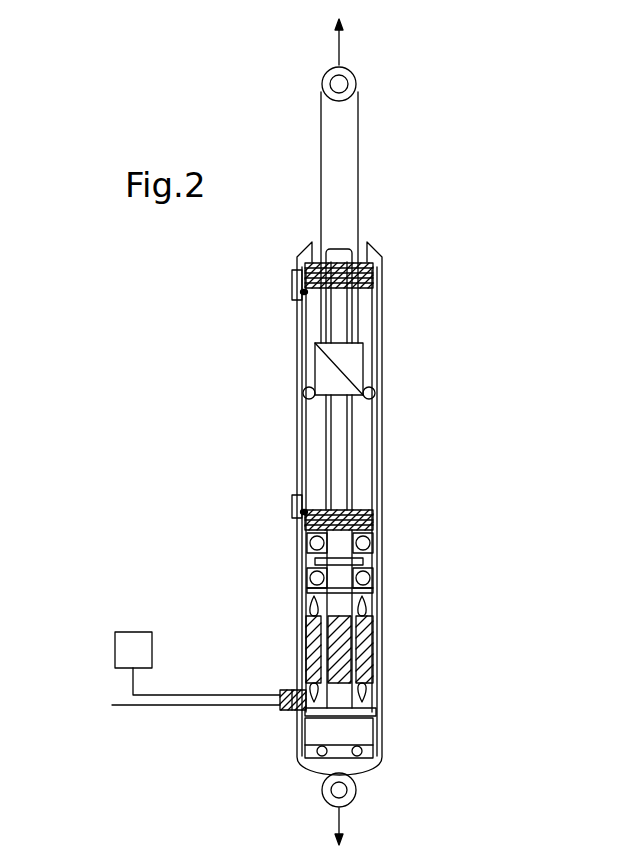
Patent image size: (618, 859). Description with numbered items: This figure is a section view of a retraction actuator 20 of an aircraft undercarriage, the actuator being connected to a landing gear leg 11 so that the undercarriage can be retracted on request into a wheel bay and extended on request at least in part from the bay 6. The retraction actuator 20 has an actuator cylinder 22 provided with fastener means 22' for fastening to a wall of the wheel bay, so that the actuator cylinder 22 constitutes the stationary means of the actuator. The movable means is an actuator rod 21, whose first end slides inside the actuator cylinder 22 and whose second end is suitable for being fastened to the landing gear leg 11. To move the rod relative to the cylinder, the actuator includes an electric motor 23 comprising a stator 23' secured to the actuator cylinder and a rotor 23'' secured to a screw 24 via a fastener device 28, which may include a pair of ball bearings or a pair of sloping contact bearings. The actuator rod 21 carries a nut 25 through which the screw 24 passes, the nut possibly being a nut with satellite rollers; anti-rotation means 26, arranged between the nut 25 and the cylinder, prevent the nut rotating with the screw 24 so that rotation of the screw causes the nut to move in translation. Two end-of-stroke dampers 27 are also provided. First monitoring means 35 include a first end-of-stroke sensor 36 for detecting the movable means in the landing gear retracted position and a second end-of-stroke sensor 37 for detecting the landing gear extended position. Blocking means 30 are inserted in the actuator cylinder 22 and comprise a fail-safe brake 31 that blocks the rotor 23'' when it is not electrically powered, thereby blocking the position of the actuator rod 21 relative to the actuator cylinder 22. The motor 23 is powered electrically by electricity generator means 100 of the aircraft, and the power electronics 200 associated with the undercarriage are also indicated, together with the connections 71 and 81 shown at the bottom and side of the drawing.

The wheel bay 6 is at (339, 833).
The landing gear leg 11 is at (339, 32).
The retraction actuator 20 is at (419, 127).
The actuator rod 21 is at (321, 147).
The actuator cylinder 22 is at (307, 750).
The fastener means 22' is at (374, 799).
The electric motor 23 is at (349, 647).
The stator 23' is at (379, 647).
The rotor 23'' is at (288, 640).
The screw 24 is at (340, 462).
The nut 25 is at (350, 358).
The anti-rotation means 26 is at (286, 393).
The end-of-stroke dampers 27 is at (373, 270).
The fastener device 28 is at (394, 562).
The blocking means 30 is at (401, 508).
The fail-safe brake 31 is at (394, 738).
The first monitoring means 35 is at (231, 557).
The first end-of-stroke sensor 36 is at (292, 505).
The second end-of-stroke sensor 37 is at (292, 290).
The connection 71 is at (117, 852).
The supply line 81 is at (140, 705).
The electricity generator means 100 is at (114, 650).
The power electronics 200 is at (272, 688).